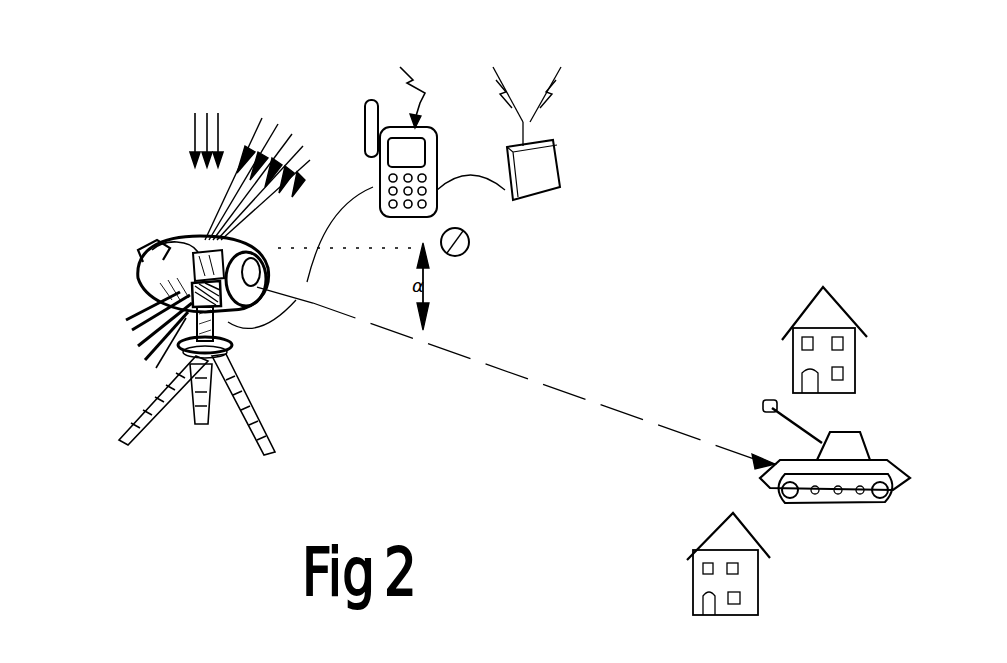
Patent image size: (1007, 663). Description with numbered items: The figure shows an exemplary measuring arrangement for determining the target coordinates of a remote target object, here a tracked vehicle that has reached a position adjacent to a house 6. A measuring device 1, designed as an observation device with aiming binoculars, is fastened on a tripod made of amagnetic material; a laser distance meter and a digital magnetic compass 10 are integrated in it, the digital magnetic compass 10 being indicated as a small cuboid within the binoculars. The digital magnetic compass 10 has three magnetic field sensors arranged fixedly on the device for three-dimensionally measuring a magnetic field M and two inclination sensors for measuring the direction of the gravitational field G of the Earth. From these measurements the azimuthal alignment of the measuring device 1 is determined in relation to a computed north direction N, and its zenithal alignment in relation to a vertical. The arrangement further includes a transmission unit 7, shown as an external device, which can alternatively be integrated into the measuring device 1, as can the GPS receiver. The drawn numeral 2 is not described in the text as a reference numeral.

The measuring device 1 is at (110, 298).
The digital magnetic compass 10 is at (196, 246).
The measuring beam / line of sight 2 is at (603, 403).
The house 6 is at (808, 310).
The transmission unit 7 is at (578, 151).
The gravitational field G is at (203, 111).
The magnetic field M is at (257, 159).
The north direction N is at (455, 242).